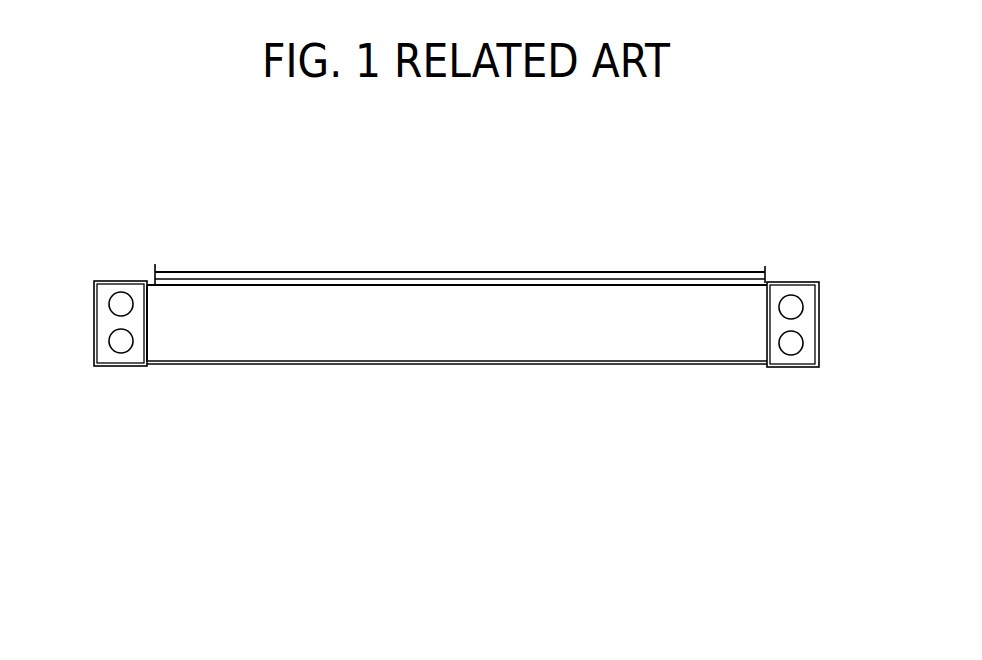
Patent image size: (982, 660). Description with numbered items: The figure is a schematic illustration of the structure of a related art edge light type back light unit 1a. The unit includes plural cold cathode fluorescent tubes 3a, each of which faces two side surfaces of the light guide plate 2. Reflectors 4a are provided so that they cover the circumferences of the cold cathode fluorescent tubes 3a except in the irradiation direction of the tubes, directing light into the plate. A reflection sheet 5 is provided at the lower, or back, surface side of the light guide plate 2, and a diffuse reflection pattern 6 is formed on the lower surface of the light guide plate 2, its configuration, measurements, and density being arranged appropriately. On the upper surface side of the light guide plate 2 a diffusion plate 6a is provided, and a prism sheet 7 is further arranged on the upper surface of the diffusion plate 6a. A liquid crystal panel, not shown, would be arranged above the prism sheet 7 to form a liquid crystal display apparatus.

The edge light type back light unit 1a is at (148, 197).
The light guide plate 2 is at (308, 298).
The cold cathode fluorescent tubes 3a is at (121, 304).
The reflectors 4a is at (95, 318).
The reflection sheet 5 is at (343, 365).
The diffuse reflection pattern 6 is at (498, 360).
The diffusion plate 6a is at (410, 280).
The prism sheet 7 is at (542, 272).